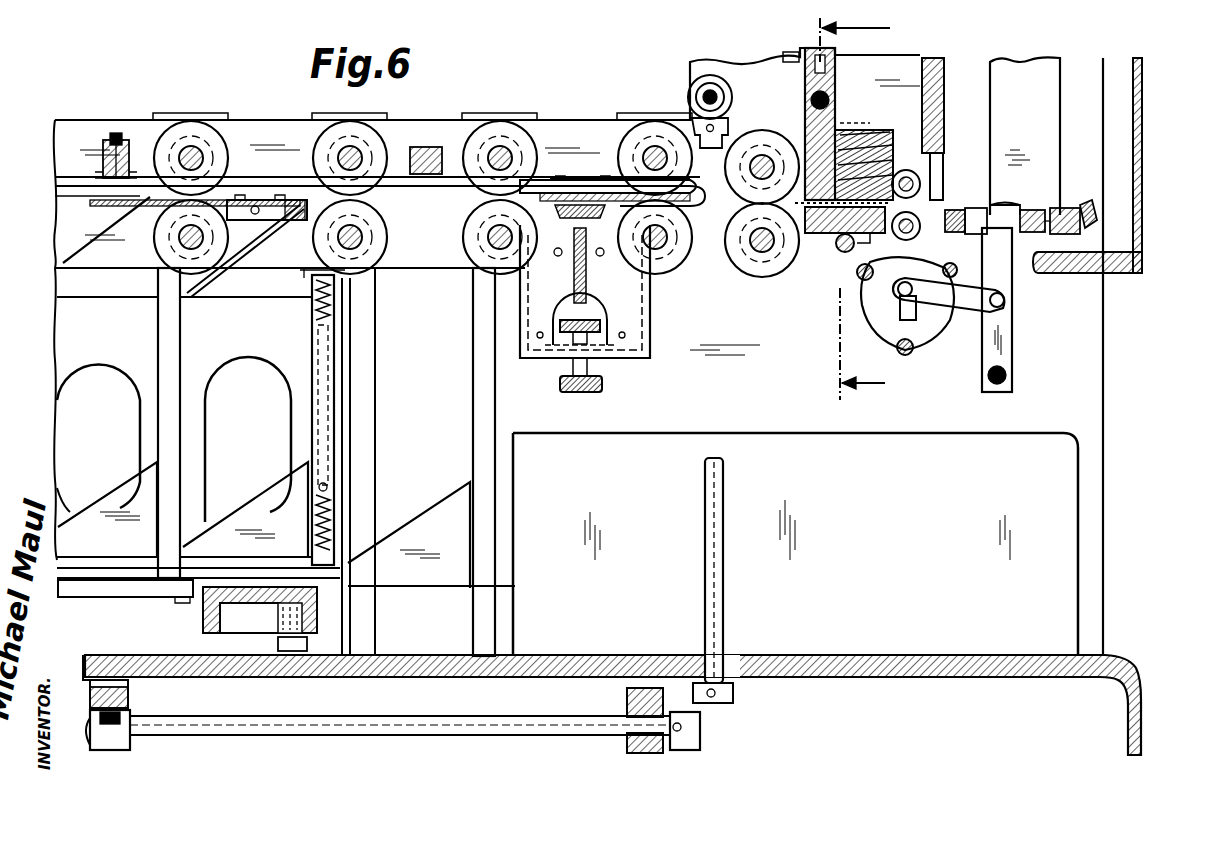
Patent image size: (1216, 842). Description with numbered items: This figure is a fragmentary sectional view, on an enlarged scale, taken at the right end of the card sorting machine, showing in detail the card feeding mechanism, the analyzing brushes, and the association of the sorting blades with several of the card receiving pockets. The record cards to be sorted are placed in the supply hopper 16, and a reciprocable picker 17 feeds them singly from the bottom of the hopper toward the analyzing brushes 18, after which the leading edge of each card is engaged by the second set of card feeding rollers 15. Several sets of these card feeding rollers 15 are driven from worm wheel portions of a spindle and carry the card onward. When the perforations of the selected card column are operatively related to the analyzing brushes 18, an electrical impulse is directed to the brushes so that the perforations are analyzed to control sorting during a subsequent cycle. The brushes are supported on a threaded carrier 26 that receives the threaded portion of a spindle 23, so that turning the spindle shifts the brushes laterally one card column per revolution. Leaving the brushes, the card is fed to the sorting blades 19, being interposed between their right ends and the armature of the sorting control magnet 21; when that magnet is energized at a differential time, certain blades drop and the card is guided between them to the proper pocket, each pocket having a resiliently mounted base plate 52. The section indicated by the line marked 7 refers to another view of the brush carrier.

The card feeding rollers 15 is at (380, 140).
The sorting blades 19 is at (545, 198).
The sorting control magnet 21 is at (618, 298).
The spindle 23 is at (805, 104).
The carrier 26 is at (833, 117).
The analyzing brushes 18 is at (822, 232).
The supply hopper 16 is at (1082, 110).
The reciprocable picker 17 is at (1090, 205).
The base plate 52 is at (112, 500).
The section line 7- 7 is at (867, 211).